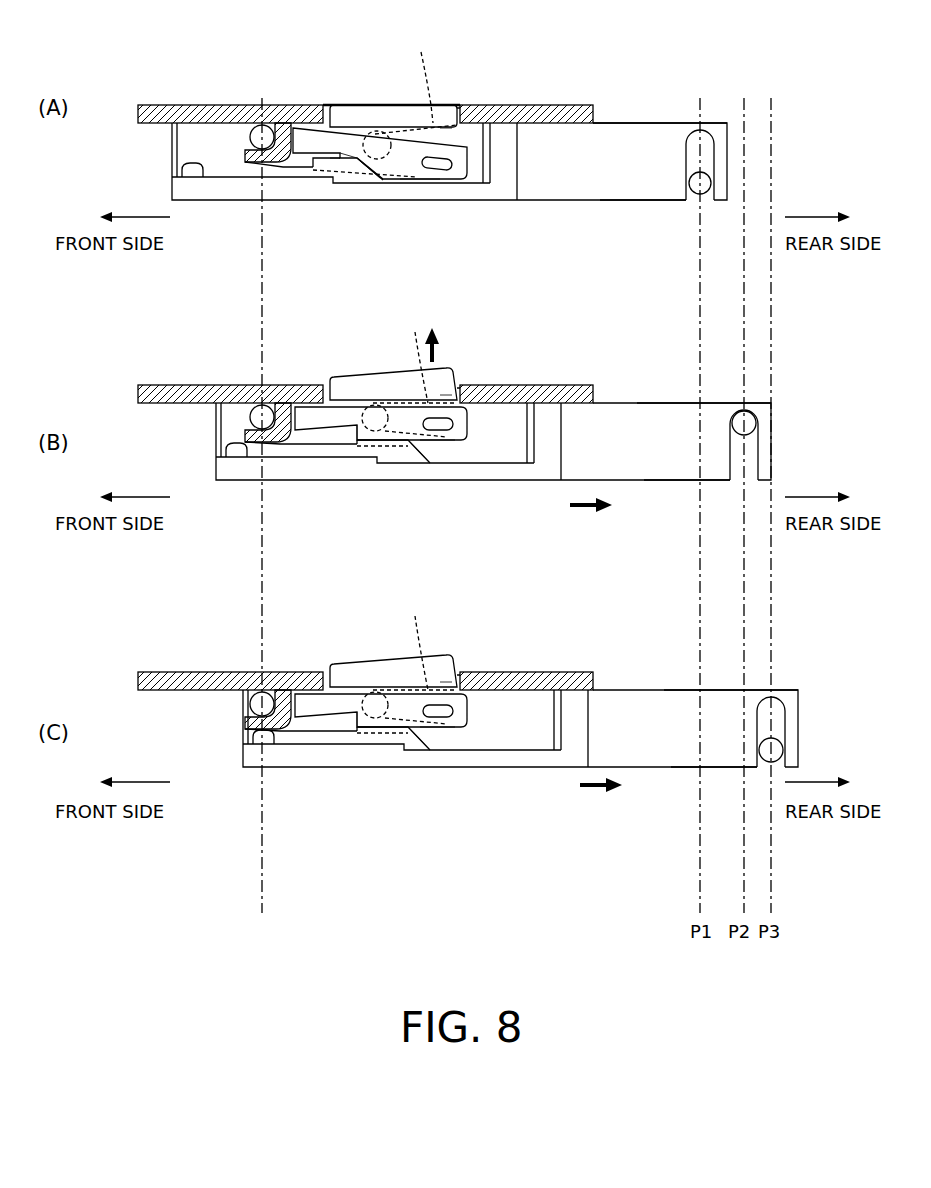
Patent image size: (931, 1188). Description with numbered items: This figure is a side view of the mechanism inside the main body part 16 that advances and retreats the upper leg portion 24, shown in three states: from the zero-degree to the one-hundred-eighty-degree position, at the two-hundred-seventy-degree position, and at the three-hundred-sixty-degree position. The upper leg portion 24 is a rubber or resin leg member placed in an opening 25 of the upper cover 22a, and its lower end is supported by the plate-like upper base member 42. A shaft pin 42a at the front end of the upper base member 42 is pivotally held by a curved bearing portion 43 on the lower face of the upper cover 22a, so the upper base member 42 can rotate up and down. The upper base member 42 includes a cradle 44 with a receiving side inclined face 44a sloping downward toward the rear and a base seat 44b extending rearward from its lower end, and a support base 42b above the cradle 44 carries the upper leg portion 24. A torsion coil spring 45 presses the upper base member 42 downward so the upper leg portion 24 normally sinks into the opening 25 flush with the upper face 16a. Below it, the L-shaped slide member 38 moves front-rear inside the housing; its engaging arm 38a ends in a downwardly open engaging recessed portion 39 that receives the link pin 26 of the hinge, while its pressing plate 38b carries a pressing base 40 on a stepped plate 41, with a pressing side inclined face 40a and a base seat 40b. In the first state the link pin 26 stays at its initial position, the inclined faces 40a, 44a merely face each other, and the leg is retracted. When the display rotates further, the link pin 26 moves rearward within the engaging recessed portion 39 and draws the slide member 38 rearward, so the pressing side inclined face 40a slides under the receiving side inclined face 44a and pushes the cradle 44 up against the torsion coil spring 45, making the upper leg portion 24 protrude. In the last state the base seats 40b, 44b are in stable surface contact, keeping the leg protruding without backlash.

The main body part 16 is at (531, 62).
The upper face 16a is at (570, 103).
The upper cover 22a is at (150, 103).
The upper leg portion 24 is at (380, 120).
The opening 25 is at (459, 108).
The link pin 26 is at (698, 194).
The slide member 38 is at (573, 176).
The engaging arm 38a is at (635, 182).
The pressing plate 38b is at (317, 190).
The engaging recessed portion 39 is at (690, 150).
The pressing base 40 is at (360, 185).
The pressing side inclined face 40a is at (388, 180).
The base seat 40b is at (340, 155).
The plate 41 is at (186, 170).
The upper base member 42 is at (462, 172).
The shaft pin 42a is at (262, 125).
The support base 42b is at (445, 135).
The bearing portion 43 is at (260, 165).
The cradle 44 is at (405, 148).
The receiving side inclined face 44a is at (355, 158).
The base seat 44b is at (435, 181).
The torsion coil spring 45 is at (415, 358).